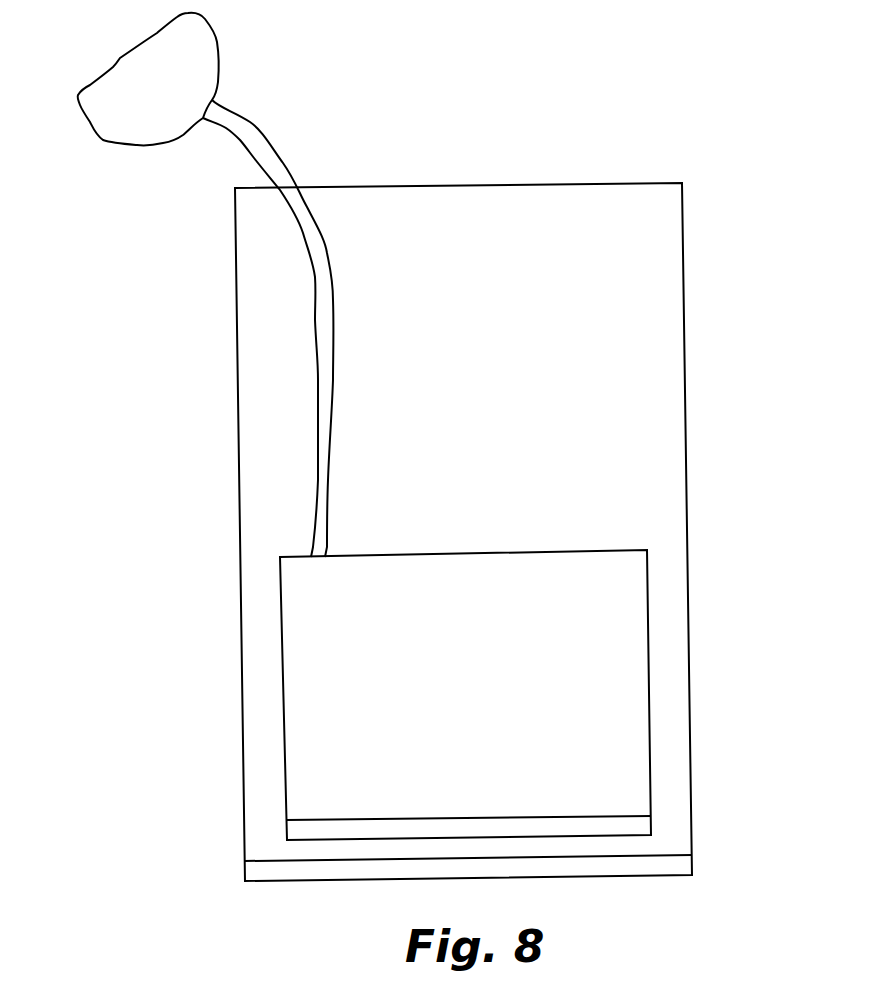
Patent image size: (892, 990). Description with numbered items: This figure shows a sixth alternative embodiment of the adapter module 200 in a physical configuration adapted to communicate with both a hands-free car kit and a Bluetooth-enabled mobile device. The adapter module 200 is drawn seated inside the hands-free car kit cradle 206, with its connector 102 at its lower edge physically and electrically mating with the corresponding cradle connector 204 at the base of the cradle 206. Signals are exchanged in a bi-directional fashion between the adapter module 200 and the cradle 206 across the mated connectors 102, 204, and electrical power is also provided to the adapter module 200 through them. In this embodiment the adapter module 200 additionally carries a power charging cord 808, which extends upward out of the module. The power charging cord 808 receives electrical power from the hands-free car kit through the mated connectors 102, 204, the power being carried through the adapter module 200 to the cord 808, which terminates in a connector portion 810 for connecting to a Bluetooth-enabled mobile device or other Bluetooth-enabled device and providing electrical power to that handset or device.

The connector portion 810 is at (113, 68).
The power charging cord 808 is at (237, 140).
The hands-free car kit cradle 206 is at (683, 257).
The adapter module 200 is at (648, 590).
The connector 102 is at (650, 827).
The cradle connector 204 is at (245, 875).